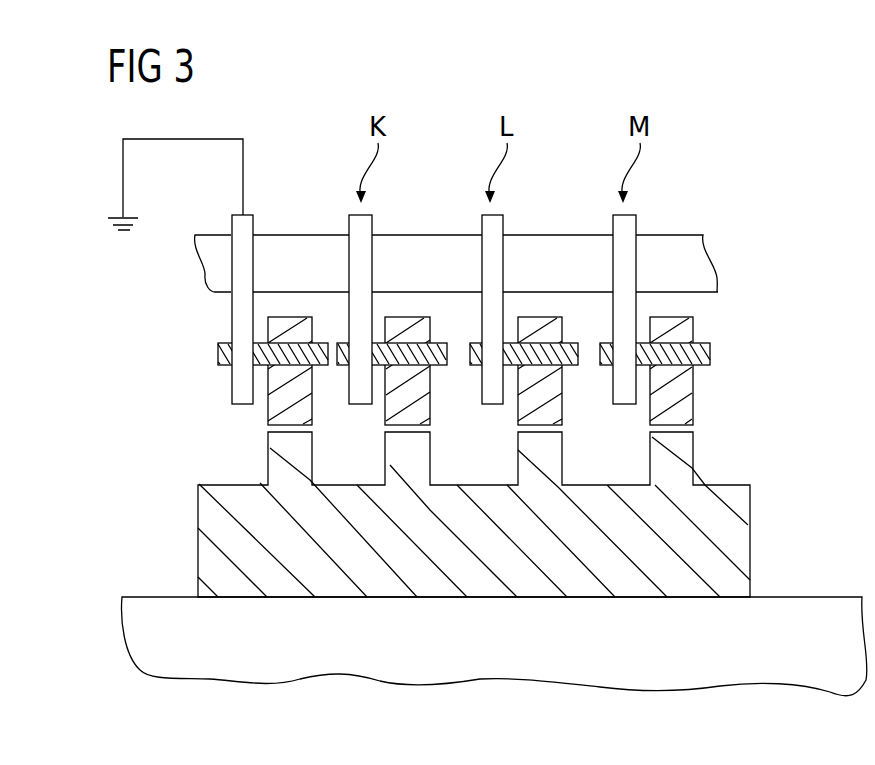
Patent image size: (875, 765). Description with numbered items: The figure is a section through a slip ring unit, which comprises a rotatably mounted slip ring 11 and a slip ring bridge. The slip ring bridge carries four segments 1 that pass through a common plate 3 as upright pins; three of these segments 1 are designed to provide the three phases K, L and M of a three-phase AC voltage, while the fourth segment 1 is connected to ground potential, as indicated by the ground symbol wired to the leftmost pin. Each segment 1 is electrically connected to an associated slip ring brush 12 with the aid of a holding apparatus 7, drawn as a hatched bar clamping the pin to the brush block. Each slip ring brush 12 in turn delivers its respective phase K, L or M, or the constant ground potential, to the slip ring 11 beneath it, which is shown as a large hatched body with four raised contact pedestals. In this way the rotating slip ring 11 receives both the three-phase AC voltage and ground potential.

The segment 1 is at (253, 224).
The printed circuit board 3 is at (428, 243).
The holding apparatus 7 is at (712, 349).
The slip ring 11 is at (786, 493).
The slip ring brush 12 is at (695, 394).